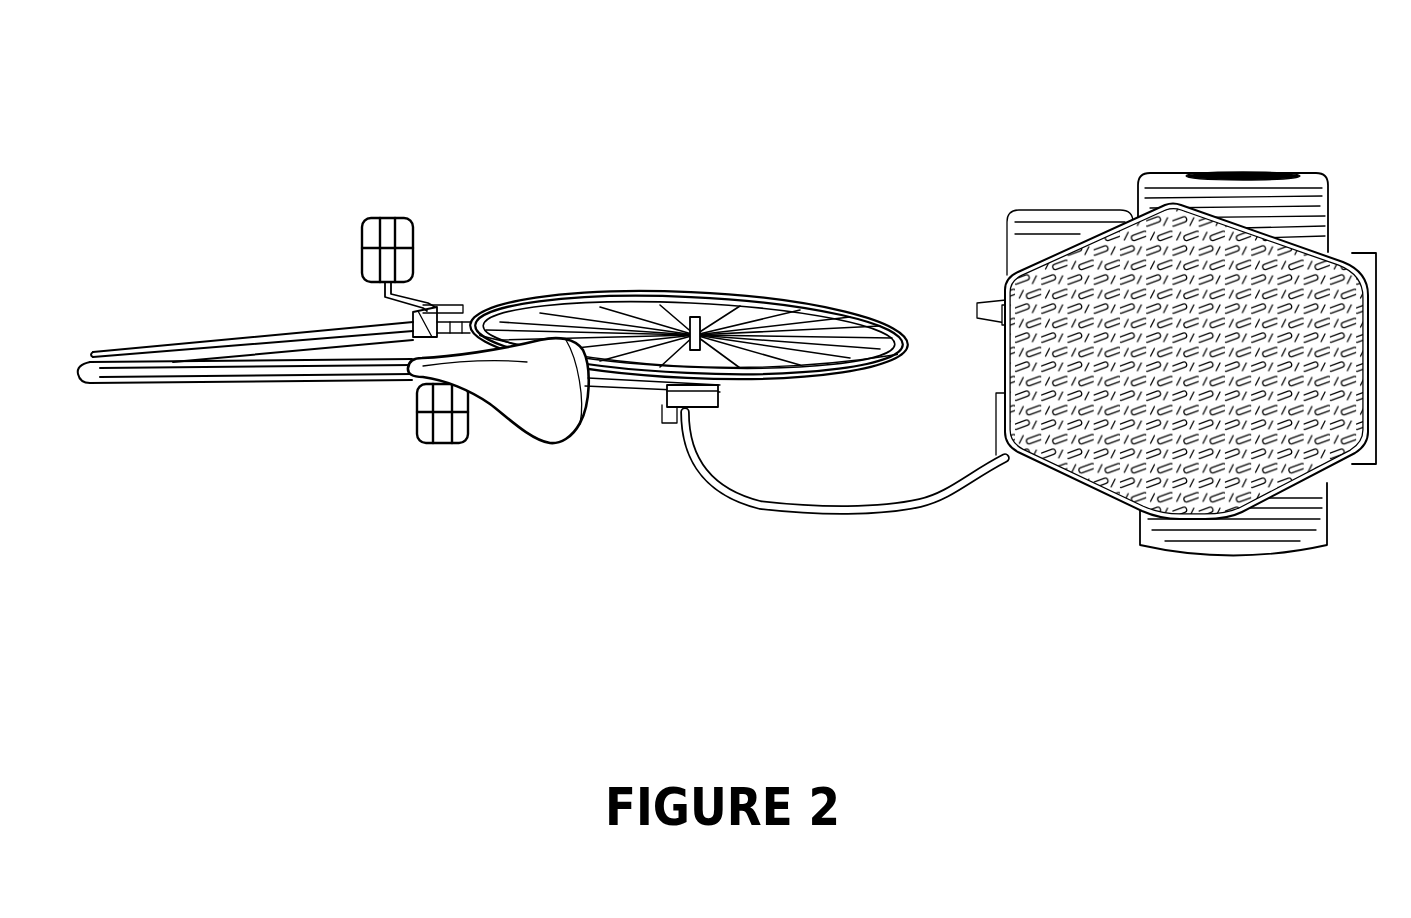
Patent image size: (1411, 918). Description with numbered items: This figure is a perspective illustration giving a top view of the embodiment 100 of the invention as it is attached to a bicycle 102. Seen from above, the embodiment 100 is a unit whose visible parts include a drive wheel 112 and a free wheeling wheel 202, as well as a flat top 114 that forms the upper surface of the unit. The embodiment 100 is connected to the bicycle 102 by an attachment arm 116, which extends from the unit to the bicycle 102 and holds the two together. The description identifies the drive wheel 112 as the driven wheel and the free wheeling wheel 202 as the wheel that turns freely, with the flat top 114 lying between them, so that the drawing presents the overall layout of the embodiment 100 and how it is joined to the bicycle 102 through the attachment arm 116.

The embodiment 100 is at (1177, 357).
The bicycle 102 is at (703, 297).
The drive wheel 112 is at (1162, 557).
The flat top 114 is at (1100, 255).
The attachment arm 116 is at (715, 497).
The free wheeling wheel 202 is at (1338, 190).